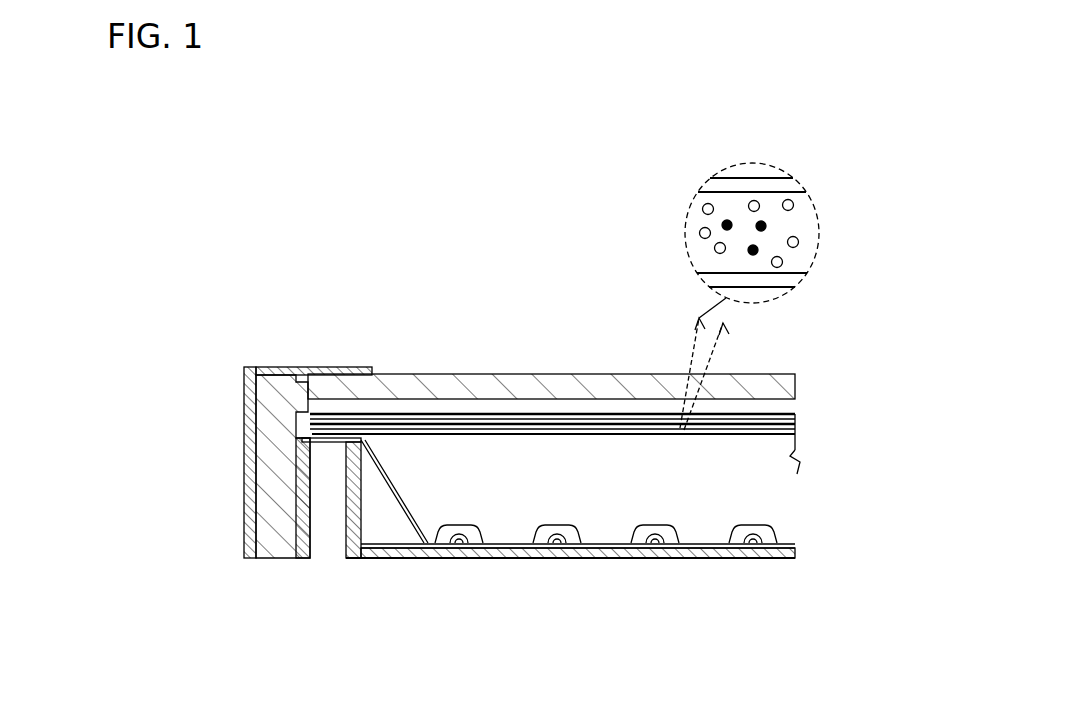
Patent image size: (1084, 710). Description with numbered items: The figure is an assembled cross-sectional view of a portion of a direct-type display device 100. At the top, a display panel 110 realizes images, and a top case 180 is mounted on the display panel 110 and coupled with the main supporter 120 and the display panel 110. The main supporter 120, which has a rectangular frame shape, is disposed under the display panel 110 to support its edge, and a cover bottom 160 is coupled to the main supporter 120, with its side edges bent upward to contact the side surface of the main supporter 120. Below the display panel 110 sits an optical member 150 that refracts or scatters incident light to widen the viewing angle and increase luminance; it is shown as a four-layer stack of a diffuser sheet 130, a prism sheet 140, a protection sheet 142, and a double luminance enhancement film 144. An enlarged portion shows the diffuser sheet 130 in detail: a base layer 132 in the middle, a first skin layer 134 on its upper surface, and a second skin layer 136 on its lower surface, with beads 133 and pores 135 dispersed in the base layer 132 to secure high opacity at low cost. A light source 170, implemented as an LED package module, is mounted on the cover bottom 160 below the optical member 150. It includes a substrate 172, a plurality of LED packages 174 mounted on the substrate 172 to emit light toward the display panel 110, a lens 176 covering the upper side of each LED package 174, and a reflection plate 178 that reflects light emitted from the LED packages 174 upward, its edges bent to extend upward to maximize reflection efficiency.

The display device 100 is at (311, 217).
The display panel 110 is at (652, 395).
The main supporter 120 is at (278, 478).
The diffuser sheet 130 is at (428, 414).
The base layer 132 is at (788, 227).
The beads 133 is at (726, 218).
The first skin layer 134 is at (752, 183).
The pores 135 is at (789, 200).
The second skin layer 136 is at (767, 283).
The prism sheet 140 is at (485, 420).
The protection sheet 142 is at (540, 424).
The double luminance enhancement film 144 is at (597, 429).
The optical member 150 is at (597, 299).
The cover bottom 160 is at (649, 552).
The light source 170 is at (382, 637).
The substrate 172 is at (431, 548).
The LED package 174 is at (462, 547).
The lens 176 is at (481, 541).
The reflection plate 178 is at (398, 540).
The top case 180 is at (244, 446).